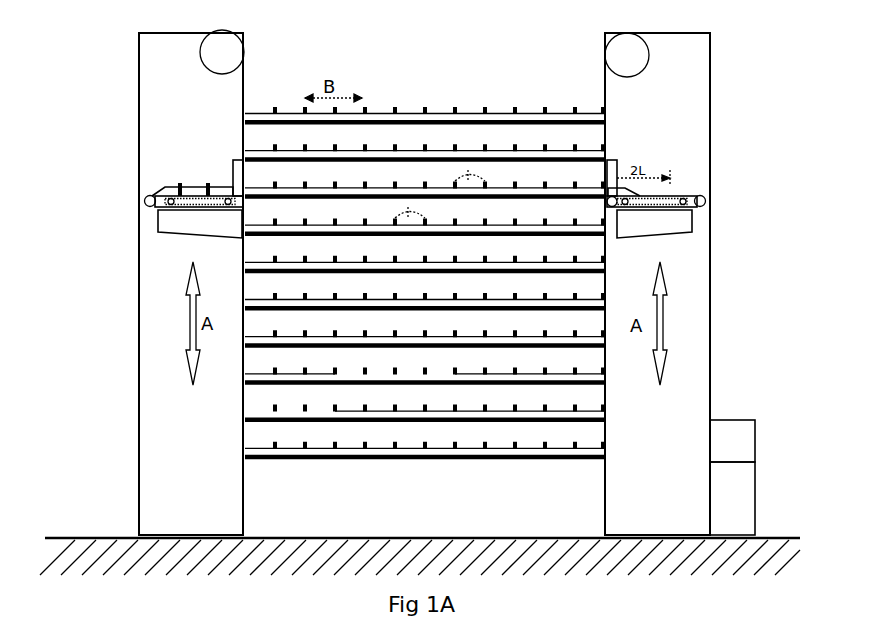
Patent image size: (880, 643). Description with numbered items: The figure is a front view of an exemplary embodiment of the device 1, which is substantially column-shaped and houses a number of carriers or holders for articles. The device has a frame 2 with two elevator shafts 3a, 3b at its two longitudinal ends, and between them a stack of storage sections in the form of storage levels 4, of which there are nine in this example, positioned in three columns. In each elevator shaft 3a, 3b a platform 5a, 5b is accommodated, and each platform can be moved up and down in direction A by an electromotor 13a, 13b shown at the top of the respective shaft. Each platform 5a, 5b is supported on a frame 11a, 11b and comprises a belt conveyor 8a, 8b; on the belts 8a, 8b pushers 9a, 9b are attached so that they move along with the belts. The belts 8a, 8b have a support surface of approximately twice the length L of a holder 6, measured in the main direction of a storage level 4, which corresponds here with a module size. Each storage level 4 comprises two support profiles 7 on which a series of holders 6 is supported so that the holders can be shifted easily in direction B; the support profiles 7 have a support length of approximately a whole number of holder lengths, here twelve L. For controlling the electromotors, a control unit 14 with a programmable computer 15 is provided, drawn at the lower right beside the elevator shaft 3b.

The device 1 is at (90, 78).
The frame 2 is at (412, 280).
The elevator shaft 3a is at (191, 284).
The elevator shaft 3b is at (657, 284).
The storage level 4 is at (402, 113).
The platform 5a is at (168, 195).
The platform 5b is at (660, 200).
The holder 6 is at (206, 195).
The support profile 7 is at (592, 485).
The belt conveyor 8a is at (158, 234).
The belt conveyor 8b is at (692, 228).
The pusher 9a is at (178, 188).
The pusher 9b is at (618, 188).
The frame 11a is at (217, 228).
The frame 11b is at (690, 235).
The electromotor 13a is at (222, 52).
The electromotor 13b is at (627, 55).
The control unit 14 is at (732, 498).
The programmable computer 15 is at (732, 441).